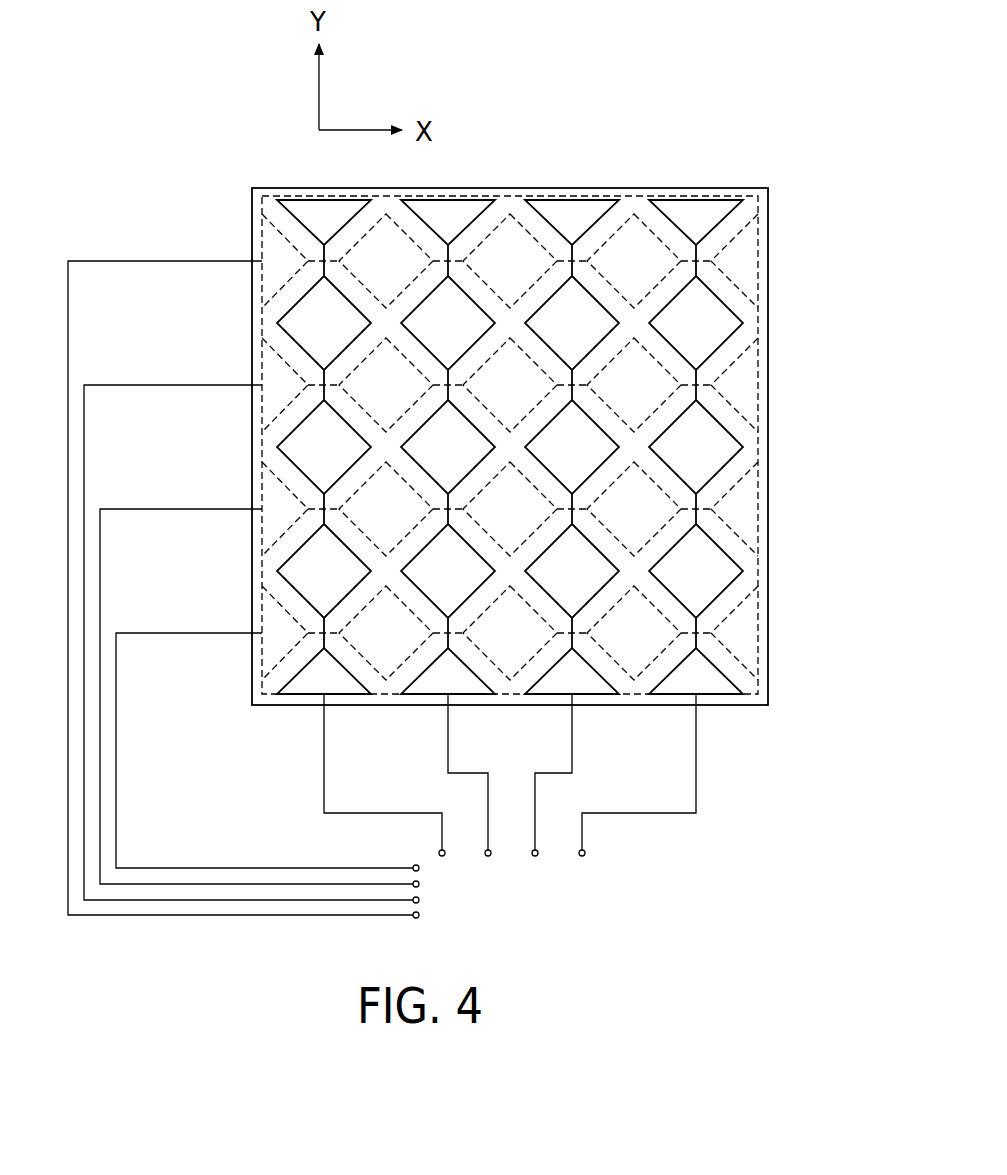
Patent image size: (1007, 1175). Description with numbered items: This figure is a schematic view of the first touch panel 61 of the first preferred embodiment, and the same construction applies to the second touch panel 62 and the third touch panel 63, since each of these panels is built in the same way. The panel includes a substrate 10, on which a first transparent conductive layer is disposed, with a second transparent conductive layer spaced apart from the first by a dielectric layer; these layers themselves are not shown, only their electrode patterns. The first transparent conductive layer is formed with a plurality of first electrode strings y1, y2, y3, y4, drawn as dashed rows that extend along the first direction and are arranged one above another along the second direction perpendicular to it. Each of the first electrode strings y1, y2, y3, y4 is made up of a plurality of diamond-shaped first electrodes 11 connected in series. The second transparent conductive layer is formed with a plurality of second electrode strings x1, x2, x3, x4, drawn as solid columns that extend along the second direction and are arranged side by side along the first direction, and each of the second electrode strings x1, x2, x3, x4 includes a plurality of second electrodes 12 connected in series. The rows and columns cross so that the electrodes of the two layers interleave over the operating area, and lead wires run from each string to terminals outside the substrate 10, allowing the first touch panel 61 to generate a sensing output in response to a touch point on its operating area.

The substrate 10 is at (769, 447).
The first electrodes 11 is at (626, 248).
The second electrodes 12 is at (708, 326).
The first touch panel 61 is at (749, 175).
The second touch panel 62 is at (749, 175).
The third touch panel 63 is at (749, 175).
The second electrode string x1 is at (290, 680).
The second electrode string x2 is at (414, 680).
The second electrode string x3 is at (538, 680).
The second electrode string x4 is at (662, 680).
The first electrode string y1 is at (278, 219).
The first electrode string y2 is at (278, 343).
The first electrode string y3 is at (278, 468).
The first electrode string y4 is at (278, 592).